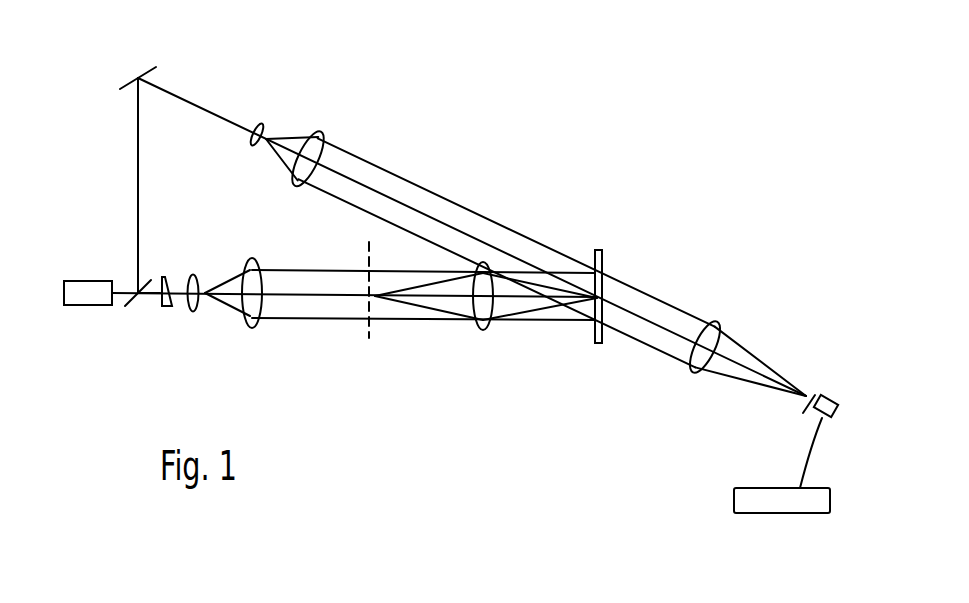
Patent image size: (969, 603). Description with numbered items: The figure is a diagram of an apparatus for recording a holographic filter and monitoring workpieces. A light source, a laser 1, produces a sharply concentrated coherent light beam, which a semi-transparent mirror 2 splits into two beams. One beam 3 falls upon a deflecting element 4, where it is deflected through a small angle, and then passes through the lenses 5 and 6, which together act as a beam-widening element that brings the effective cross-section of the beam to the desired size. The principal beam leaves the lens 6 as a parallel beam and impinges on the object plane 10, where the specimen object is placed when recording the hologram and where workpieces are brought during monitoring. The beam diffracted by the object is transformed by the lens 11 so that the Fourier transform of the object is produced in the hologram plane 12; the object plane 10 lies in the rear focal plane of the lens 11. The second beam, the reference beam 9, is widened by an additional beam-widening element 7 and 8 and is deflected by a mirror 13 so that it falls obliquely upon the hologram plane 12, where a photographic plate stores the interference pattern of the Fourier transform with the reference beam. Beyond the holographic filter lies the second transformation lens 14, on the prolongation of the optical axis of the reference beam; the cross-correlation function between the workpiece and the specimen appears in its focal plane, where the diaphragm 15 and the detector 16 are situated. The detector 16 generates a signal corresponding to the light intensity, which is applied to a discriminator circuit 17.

The laser 1 is at (102, 298).
The semi-transparent mirror 2 is at (130, 310).
The beam 3 is at (150, 295).
The deflecting element 4 is at (165, 282).
The lens 5 is at (197, 275).
The lens 6 is at (257, 263).
The beam-widening element lens 7 is at (263, 132).
The beam-widening element lens 8 is at (310, 135).
The reference beam 9 is at (133, 215).
The object plane 10 is at (368, 343).
The lens 11 is at (478, 335).
The hologram plane 12 is at (592, 345).
The mirror 13 is at (150, 67).
The second transformation lens 14 is at (715, 322).
The diaphragm 15 is at (812, 392).
The detector 16 is at (830, 402).
The discriminator circuit 17 is at (798, 508).